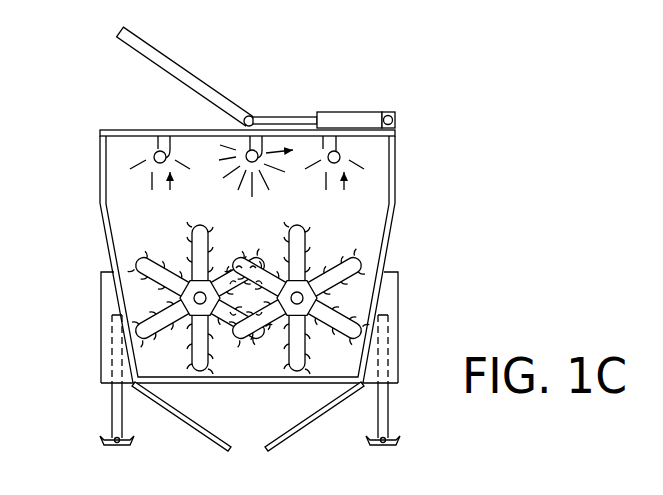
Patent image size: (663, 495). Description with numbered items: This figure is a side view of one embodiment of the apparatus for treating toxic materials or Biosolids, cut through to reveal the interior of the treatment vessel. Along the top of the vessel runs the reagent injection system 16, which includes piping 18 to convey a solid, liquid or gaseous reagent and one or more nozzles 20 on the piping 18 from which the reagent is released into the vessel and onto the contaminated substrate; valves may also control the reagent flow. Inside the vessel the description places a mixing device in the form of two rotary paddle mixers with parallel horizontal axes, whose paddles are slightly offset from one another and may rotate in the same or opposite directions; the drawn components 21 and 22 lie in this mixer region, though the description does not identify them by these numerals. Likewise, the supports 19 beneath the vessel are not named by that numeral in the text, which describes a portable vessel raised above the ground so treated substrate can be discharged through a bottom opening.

The reagent injection system 16 is at (247, 142).
The piping 18 is at (165, 142).
The support legs 19 is at (110, 407).
The nozzles 20 is at (292, 424).
The rotary tine agitators 21 is at (192, 292).
The tines 22 is at (247, 298).